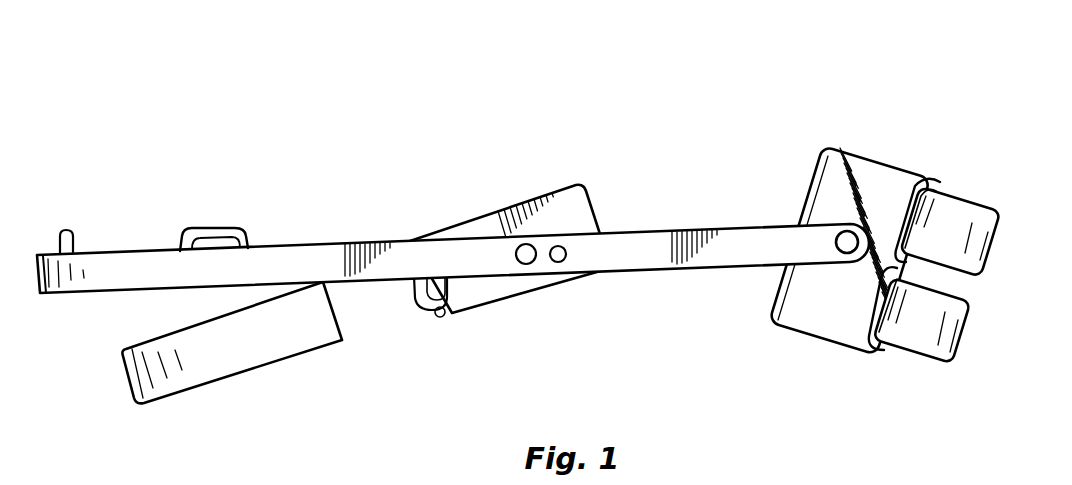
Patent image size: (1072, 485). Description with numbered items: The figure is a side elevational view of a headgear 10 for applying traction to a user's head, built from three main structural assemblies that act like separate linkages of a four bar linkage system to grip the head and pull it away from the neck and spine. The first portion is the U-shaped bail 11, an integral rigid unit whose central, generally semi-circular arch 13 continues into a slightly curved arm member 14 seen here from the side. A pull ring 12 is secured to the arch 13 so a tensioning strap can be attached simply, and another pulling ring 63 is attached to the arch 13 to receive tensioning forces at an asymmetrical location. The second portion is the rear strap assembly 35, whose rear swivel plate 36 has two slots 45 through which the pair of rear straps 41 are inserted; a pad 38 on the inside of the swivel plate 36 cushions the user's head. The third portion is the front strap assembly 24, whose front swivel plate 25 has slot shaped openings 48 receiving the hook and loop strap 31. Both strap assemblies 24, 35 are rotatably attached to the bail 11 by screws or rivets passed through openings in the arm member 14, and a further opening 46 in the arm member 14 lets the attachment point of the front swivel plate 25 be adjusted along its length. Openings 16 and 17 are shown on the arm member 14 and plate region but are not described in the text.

The headgear 10 is at (662, 150).
The U-shaped bail 11 is at (450, 244).
The pull ring 12 is at (72, 230).
The central arch 13 is at (105, 280).
The arm member 14 is at (737, 255).
The hole 16 is at (526, 264).
The pivot pin 17 is at (838, 233).
The front strap assembly 24 is at (366, 288).
The front swivel plate 25 is at (562, 198).
The hook and loop strap 31 is at (245, 353).
The rear strap assembly 35 is at (836, 264).
The rear swivel plate 36 is at (836, 211).
The pad 38 is at (810, 163).
The rear straps 41 is at (953, 325).
The slots 45 is at (932, 179).
The opening 46 is at (558, 262).
The slot shaped openings 48 is at (446, 316).
The pulling ring 63 is at (200, 227).